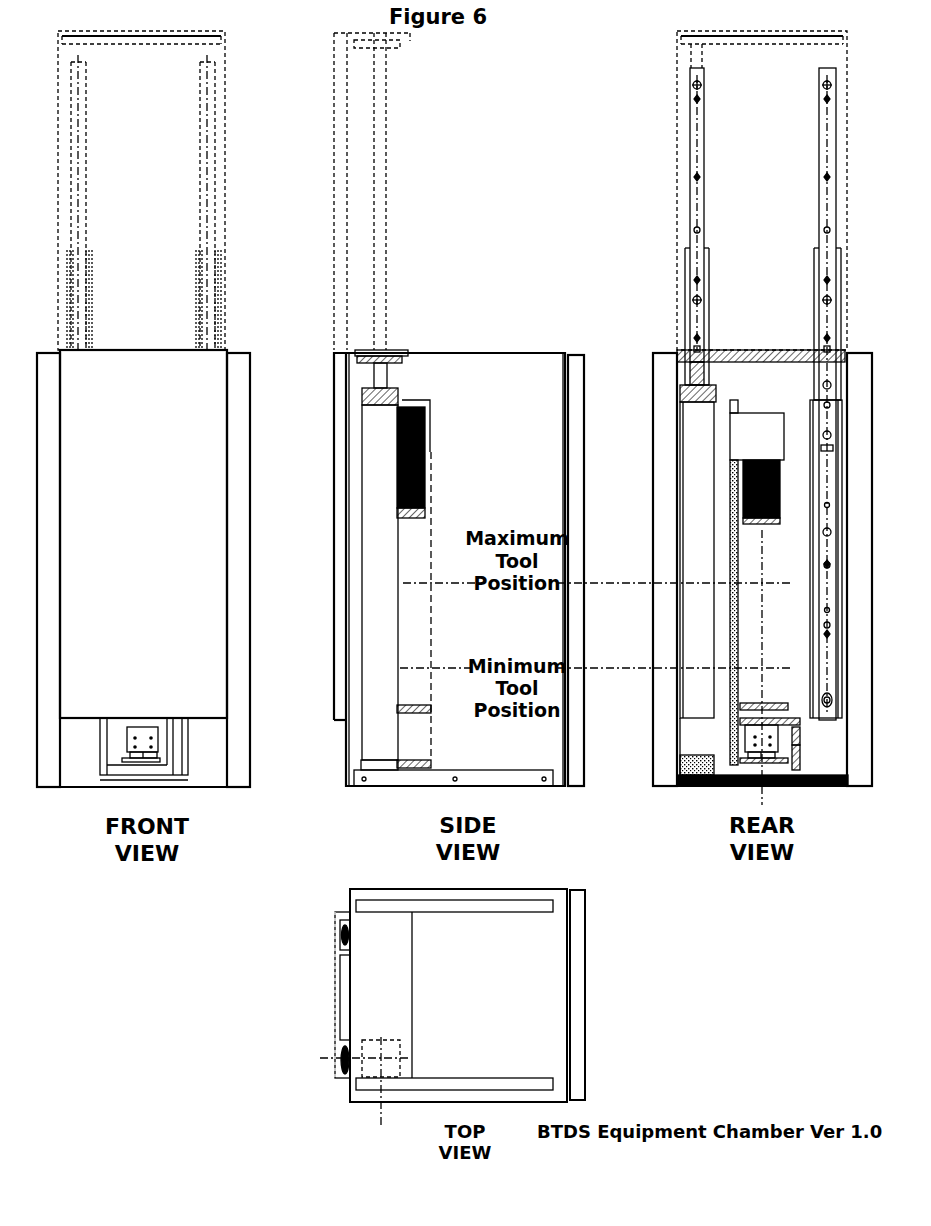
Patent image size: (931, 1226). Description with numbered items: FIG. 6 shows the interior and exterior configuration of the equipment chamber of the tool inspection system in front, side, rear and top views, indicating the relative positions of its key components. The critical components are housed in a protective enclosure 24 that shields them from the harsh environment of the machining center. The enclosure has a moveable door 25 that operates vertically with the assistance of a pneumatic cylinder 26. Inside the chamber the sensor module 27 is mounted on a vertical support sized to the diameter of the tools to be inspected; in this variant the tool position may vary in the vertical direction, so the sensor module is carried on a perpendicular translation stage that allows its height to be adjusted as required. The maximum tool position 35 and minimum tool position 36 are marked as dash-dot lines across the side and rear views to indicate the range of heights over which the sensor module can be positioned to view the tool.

The protective enclosure 24 is at (135, 472).
The moveable door 25 is at (205, 885).
The pneumatic cylinder 26 is at (804, 806).
The sensor module 27 is at (479, 380).
The maximum tool position 35 is at (596, 436).
The minimum tool position 36 is at (595, 767).